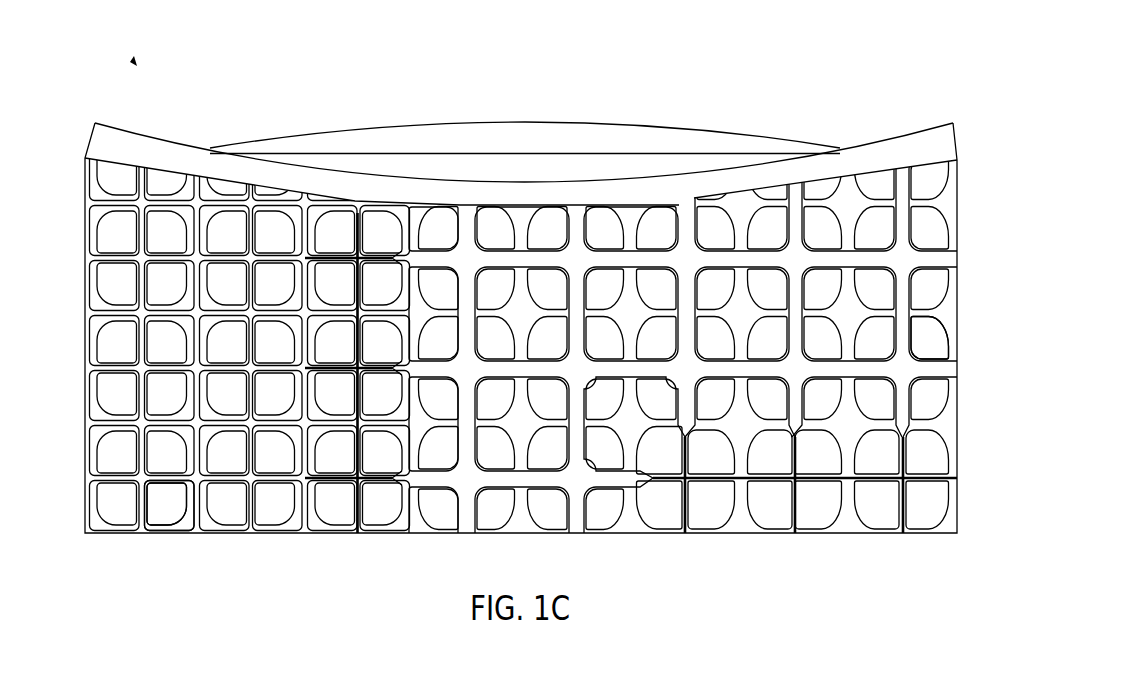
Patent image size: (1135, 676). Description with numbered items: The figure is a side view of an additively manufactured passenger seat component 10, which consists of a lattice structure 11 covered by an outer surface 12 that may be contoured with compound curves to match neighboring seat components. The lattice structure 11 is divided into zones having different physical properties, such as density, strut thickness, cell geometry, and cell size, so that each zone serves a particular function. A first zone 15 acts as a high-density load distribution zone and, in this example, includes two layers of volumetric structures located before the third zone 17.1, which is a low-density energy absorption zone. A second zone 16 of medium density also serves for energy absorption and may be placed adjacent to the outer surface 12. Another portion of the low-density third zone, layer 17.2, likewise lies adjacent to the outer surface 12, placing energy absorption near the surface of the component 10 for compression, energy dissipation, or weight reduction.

The component 10 is at (133, 60).
The lattice structure 11 is at (947, 262).
The outer surface 12 is at (625, 140).
The first zone 15 is at (950, 370).
The second zone 16 is at (142, 500).
The third zone 17.1 is at (932, 482).
The third zone layer 17.2 is at (357, 505).